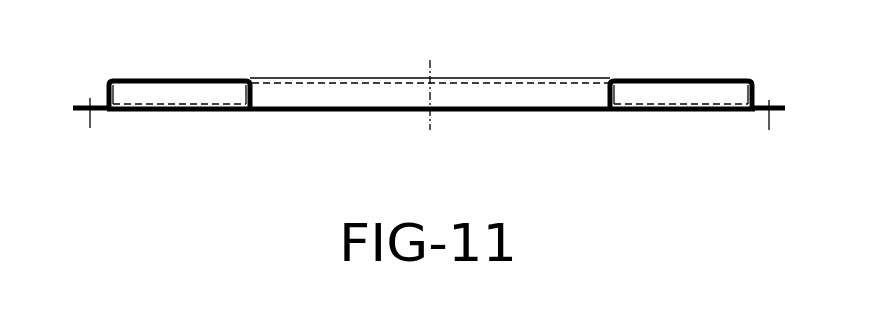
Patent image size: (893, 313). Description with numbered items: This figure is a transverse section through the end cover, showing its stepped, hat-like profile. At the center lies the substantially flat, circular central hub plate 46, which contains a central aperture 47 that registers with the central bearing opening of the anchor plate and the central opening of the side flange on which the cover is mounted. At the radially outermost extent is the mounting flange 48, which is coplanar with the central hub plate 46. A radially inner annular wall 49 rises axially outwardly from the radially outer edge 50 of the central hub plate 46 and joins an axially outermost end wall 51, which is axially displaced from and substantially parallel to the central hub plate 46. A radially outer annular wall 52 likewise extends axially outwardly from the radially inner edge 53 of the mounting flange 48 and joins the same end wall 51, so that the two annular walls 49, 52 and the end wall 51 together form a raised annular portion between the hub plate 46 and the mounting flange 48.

The central hub plate 46 is at (523, 112).
The central aperture 47 is at (413, 110).
The mounting flange 48 is at (80, 105).
The radially inner annular wall 49 is at (253, 92).
The radially outer edge of the central hub plate 50 is at (245, 110).
The axially outermost end wall 51 is at (185, 80).
The radially outer annular wall 52 is at (107, 93).
The radially inner edge of the mounting flange 53 is at (747, 112).